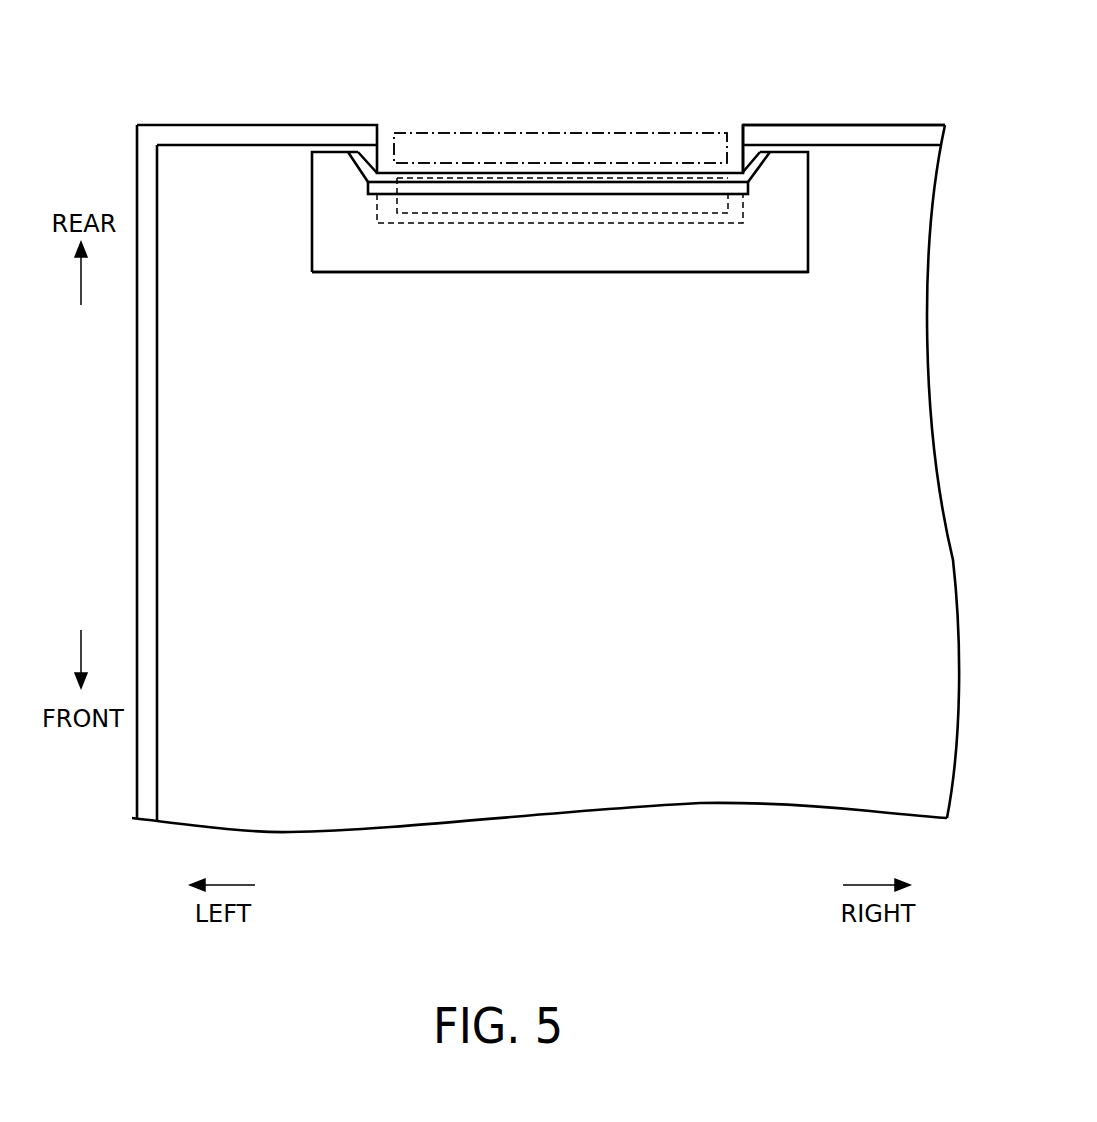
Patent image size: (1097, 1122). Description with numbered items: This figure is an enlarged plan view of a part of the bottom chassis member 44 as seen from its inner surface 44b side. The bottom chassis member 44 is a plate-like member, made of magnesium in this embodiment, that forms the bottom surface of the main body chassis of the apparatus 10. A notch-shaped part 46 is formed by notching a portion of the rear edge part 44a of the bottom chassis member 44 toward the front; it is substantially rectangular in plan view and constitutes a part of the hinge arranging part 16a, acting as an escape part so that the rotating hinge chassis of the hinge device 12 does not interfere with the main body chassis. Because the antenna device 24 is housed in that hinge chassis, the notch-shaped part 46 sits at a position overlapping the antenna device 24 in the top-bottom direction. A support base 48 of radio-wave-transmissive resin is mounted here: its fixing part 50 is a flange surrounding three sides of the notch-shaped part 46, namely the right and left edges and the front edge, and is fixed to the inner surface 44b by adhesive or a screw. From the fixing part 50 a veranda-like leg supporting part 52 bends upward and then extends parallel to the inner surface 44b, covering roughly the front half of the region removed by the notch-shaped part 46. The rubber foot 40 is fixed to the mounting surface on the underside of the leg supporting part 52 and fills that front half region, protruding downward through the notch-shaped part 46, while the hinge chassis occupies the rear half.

The image forming apparatus 10 is at (100, 36).
The hinge device 12 is at (547, 130).
The antenna device 24 is at (560, 148).
The hinge arranging part 16a is at (742, 152).
The rubber foot 40 is at (667, 213).
The bottom chassis member 44 is at (448, 792).
The rear edge part 44a is at (852, 125).
The inner surface 44b is at (607, 787).
The notch-shaped part 46 is at (579, 222).
The support base 48 is at (518, 272).
The fixing part 50 is at (402, 258).
The leg supporting part 52 is at (453, 172).